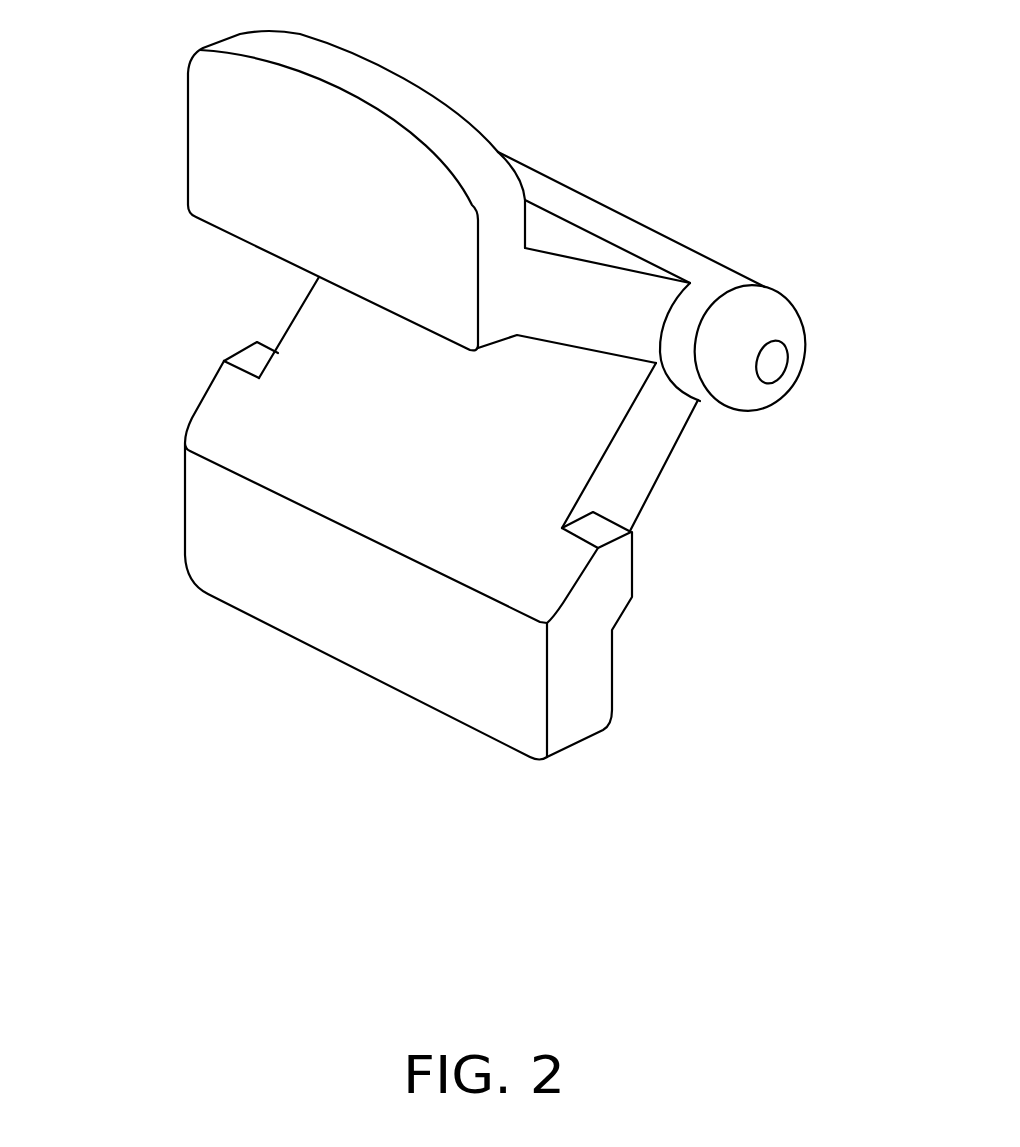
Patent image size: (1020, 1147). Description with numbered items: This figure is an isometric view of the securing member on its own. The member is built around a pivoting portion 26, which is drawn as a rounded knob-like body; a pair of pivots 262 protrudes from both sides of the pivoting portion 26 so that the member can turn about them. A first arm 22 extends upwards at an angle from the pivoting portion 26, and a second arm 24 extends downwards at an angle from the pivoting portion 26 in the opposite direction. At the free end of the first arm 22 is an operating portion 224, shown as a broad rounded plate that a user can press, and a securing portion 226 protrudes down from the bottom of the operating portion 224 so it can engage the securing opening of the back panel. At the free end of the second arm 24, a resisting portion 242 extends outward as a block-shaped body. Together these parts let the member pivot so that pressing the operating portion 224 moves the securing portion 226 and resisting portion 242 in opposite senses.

The first arm 22 is at (558, 237).
The operating portion 224 is at (223, 150).
The securing portion 226 is at (492, 330).
The second arm 24 is at (337, 340).
The resisting portion 242 is at (352, 622).
The pivoting portion 26 is at (665, 253).
The pivot 262 is at (763, 320).